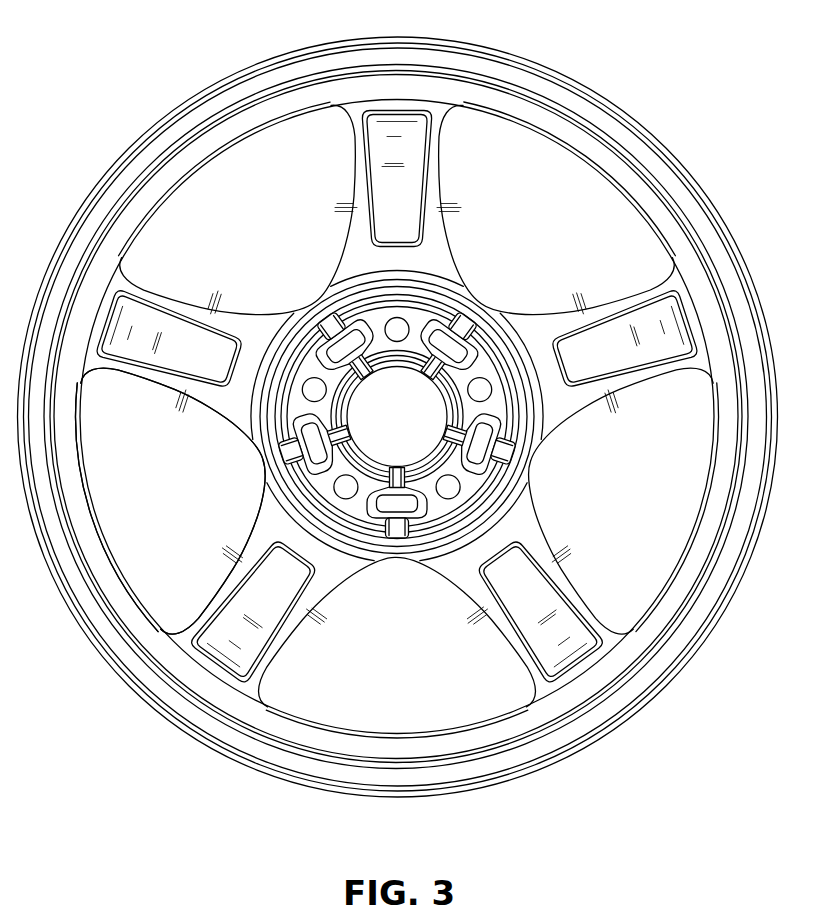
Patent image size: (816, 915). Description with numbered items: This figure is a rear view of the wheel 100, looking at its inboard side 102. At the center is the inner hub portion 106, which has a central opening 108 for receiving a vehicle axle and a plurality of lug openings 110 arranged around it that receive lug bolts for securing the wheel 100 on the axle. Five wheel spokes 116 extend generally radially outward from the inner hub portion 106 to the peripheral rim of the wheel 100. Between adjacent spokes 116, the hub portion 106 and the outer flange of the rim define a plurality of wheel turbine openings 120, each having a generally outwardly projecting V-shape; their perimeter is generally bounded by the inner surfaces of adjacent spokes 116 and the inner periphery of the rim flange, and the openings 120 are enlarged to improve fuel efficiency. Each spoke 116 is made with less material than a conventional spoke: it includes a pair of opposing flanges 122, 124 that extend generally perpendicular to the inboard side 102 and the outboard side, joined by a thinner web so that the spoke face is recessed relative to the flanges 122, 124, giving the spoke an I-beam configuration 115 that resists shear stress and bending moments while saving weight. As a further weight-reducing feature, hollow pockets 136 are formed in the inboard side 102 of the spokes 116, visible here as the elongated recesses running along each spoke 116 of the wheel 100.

The wheel 100 is at (606, 93).
The inboard side 102 is at (432, 144).
The inner hub portion 106 is at (496, 350).
The opening 108 is at (442, 396).
The lug openings 110 is at (493, 388).
The I-beam configuration 115 is at (641, 330).
The wheel spokes 116 is at (588, 618).
The wheel turbine openings 120 is at (653, 515).
The flange 122 is at (311, 623).
The flange 124 is at (232, 567).
The hollow pockets 136 is at (162, 333).